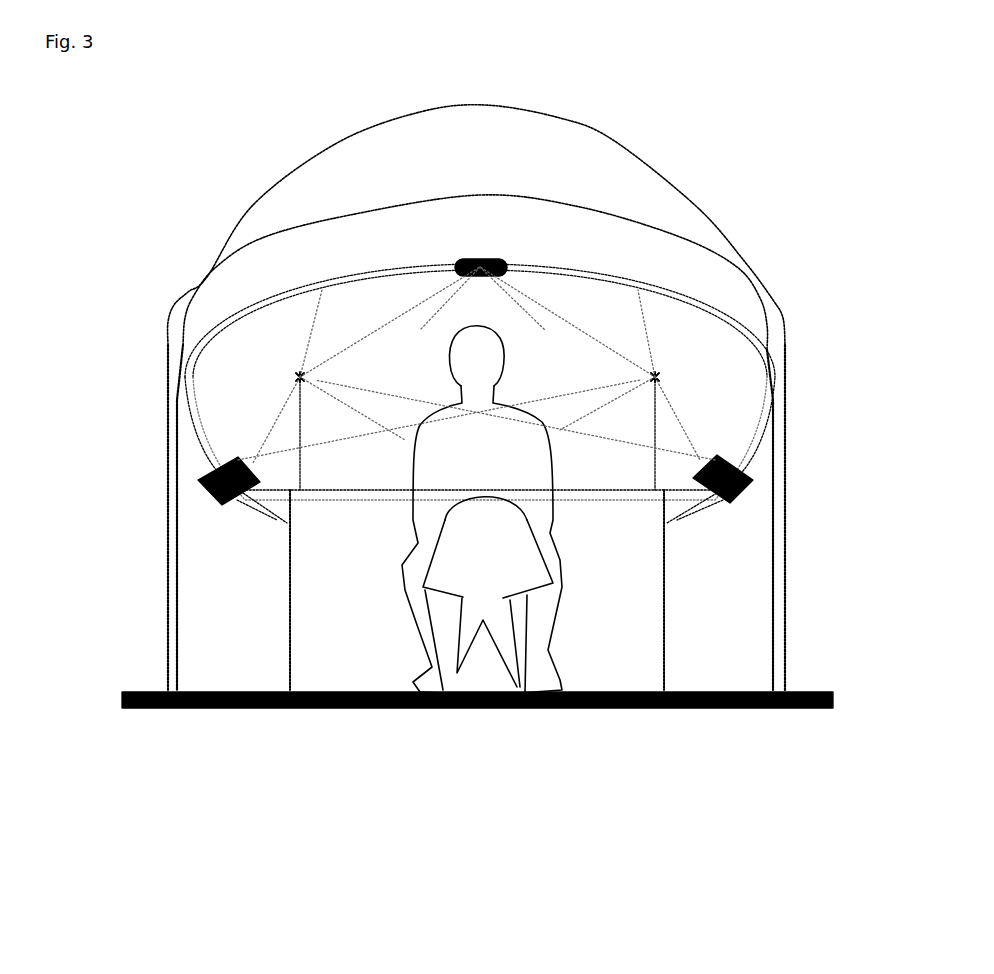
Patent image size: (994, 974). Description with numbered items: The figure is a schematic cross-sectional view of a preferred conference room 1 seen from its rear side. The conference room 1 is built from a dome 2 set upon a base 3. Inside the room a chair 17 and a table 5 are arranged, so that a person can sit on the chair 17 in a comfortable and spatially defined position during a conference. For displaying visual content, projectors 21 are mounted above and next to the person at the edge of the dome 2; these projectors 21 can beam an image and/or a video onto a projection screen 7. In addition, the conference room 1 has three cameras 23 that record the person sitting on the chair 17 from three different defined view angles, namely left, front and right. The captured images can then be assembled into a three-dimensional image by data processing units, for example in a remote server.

The conference room 1 is at (774, 100).
The dome 2 is at (393, 150).
The base 3 is at (697, 640).
The table 5 is at (357, 497).
The projection screen 7 is at (600, 316).
The chair 17 is at (483, 572).
The projectors 21 is at (481, 260).
The cameras 23 is at (297, 377).